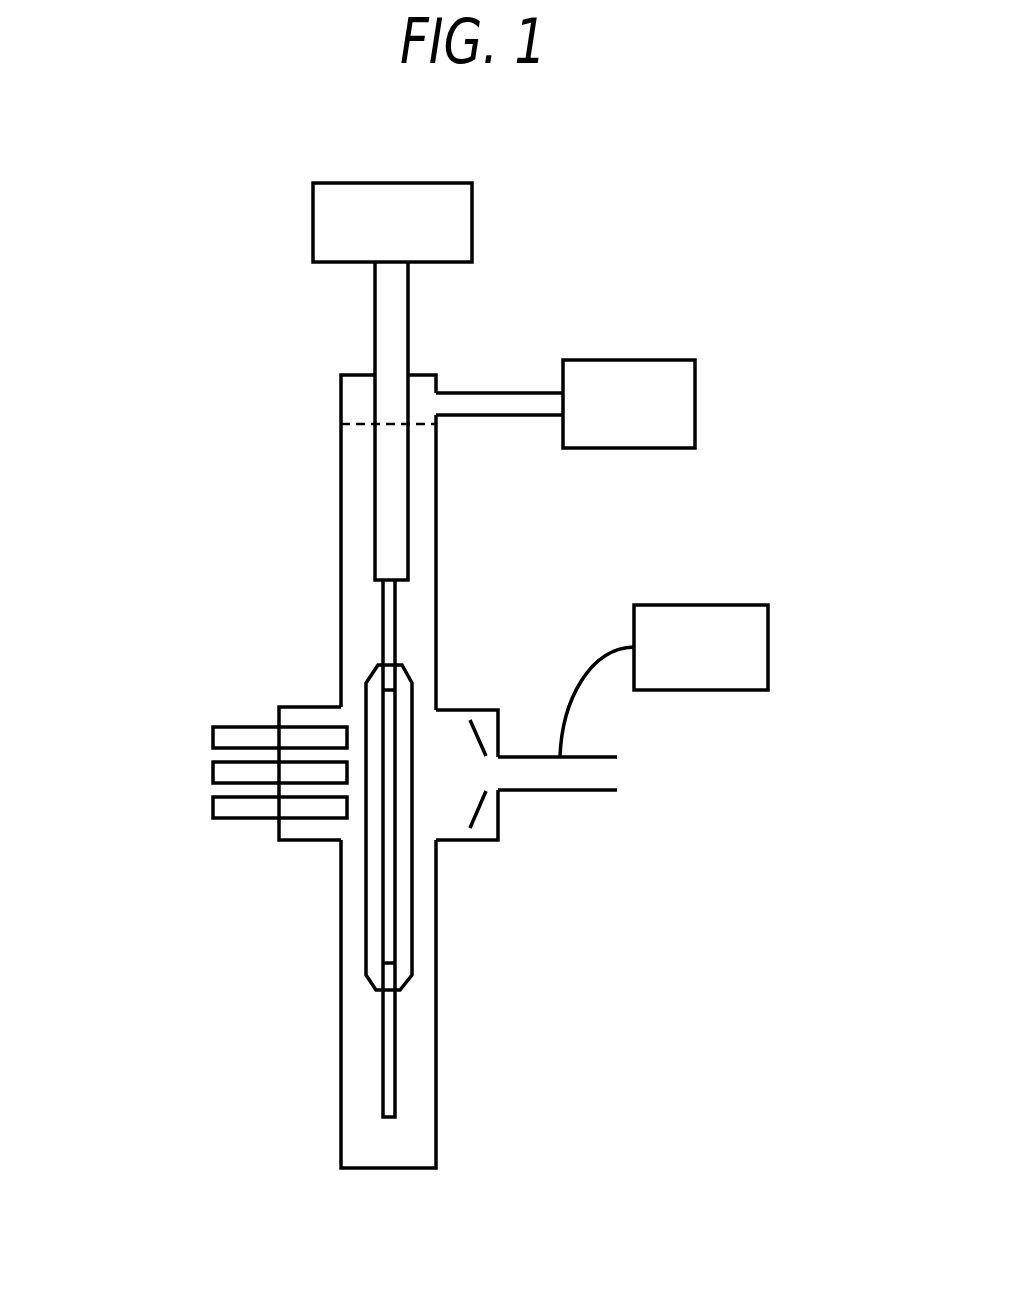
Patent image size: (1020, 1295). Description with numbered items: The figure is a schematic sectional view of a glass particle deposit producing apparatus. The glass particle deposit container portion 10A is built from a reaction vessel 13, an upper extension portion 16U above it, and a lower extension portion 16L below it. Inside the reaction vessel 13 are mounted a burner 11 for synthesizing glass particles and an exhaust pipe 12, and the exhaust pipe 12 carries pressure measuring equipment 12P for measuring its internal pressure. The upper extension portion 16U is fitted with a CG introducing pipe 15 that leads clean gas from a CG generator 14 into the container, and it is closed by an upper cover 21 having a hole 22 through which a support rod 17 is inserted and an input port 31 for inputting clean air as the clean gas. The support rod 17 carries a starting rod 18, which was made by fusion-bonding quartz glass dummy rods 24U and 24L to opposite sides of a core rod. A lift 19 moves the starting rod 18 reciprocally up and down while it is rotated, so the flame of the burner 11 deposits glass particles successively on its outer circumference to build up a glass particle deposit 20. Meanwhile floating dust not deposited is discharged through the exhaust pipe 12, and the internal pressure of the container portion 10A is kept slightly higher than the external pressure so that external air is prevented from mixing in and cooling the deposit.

The glass particle deposit container portion 10A is at (273, 638).
The burner 11 is at (213, 805).
The exhaust pipe 12 is at (612, 773).
The pressure measuring equipment 12P is at (768, 635).
The reaction vessel 13 is at (425, 708).
The CG generator 14 is at (695, 392).
The CG introducing pipe 15 is at (510, 393).
The upper extension portion 16U is at (341, 490).
The lower extension portion 16L is at (340, 987).
The support rod 17 is at (375, 326).
The starting rod 18 is at (388, 873).
The lift 19 is at (472, 215).
The glass particle deposit 20 is at (417, 947).
The upper cover 21 is at (427, 386).
The hole 22 is at (390, 373).
The dummy rod 24U is at (392, 602).
The dummy rod 24L is at (395, 1055).
The input port 31 is at (441, 401).